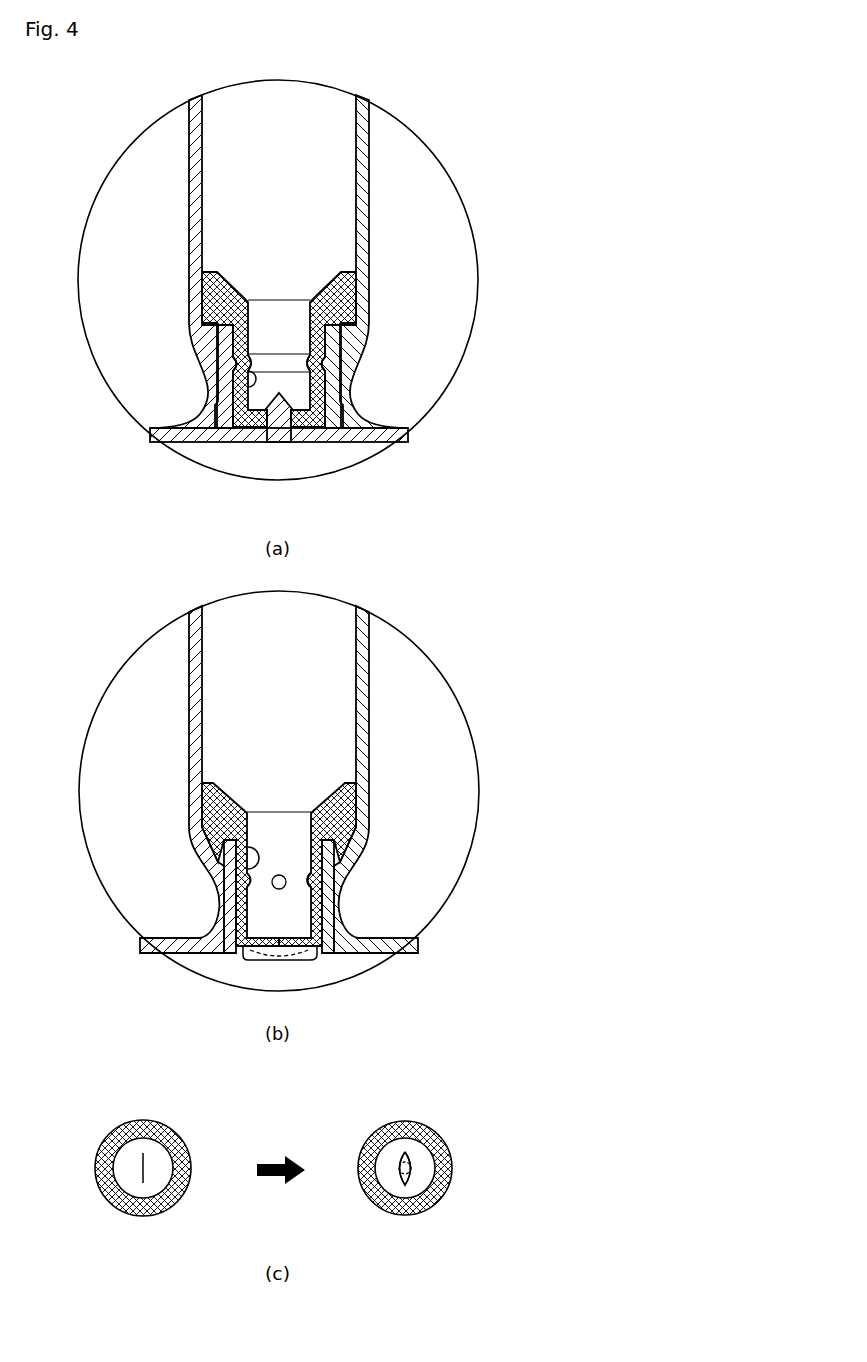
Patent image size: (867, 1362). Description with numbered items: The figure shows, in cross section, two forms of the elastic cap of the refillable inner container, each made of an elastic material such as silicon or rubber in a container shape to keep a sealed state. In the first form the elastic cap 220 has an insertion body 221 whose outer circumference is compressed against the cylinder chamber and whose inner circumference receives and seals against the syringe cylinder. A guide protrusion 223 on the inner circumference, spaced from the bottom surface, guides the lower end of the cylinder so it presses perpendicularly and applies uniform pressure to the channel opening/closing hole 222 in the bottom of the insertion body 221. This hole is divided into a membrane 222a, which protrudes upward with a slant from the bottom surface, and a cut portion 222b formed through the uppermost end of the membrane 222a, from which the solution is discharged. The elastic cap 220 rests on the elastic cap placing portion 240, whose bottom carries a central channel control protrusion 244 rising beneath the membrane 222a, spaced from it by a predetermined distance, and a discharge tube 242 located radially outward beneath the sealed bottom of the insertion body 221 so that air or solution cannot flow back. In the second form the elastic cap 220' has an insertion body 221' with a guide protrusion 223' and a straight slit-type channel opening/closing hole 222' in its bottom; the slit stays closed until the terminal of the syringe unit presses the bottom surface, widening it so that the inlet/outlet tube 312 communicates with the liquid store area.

The elastic cap 220 is at (320, 327).
The insertion body 221 is at (375, 320).
The channel opening/closing hole 222 is at (430, 313).
The membrane 222a is at (340, 360).
The cut portion 222b is at (335, 340).
The guide protrusion 223 is at (161, 406).
The elastic cap placing portion 240 is at (349, 423).
The discharge tube 242 is at (307, 442).
The channel control protrusion 244 is at (277, 442).
The elastic cap 220' is at (272, 1000).
The insertion body 221' is at (208, 1000).
The channel opening/closing hole 222' is at (243, 1024).
The guide protrusion 223' is at (176, 835).
The inlet/outlet tube 312 is at (413, 1168).